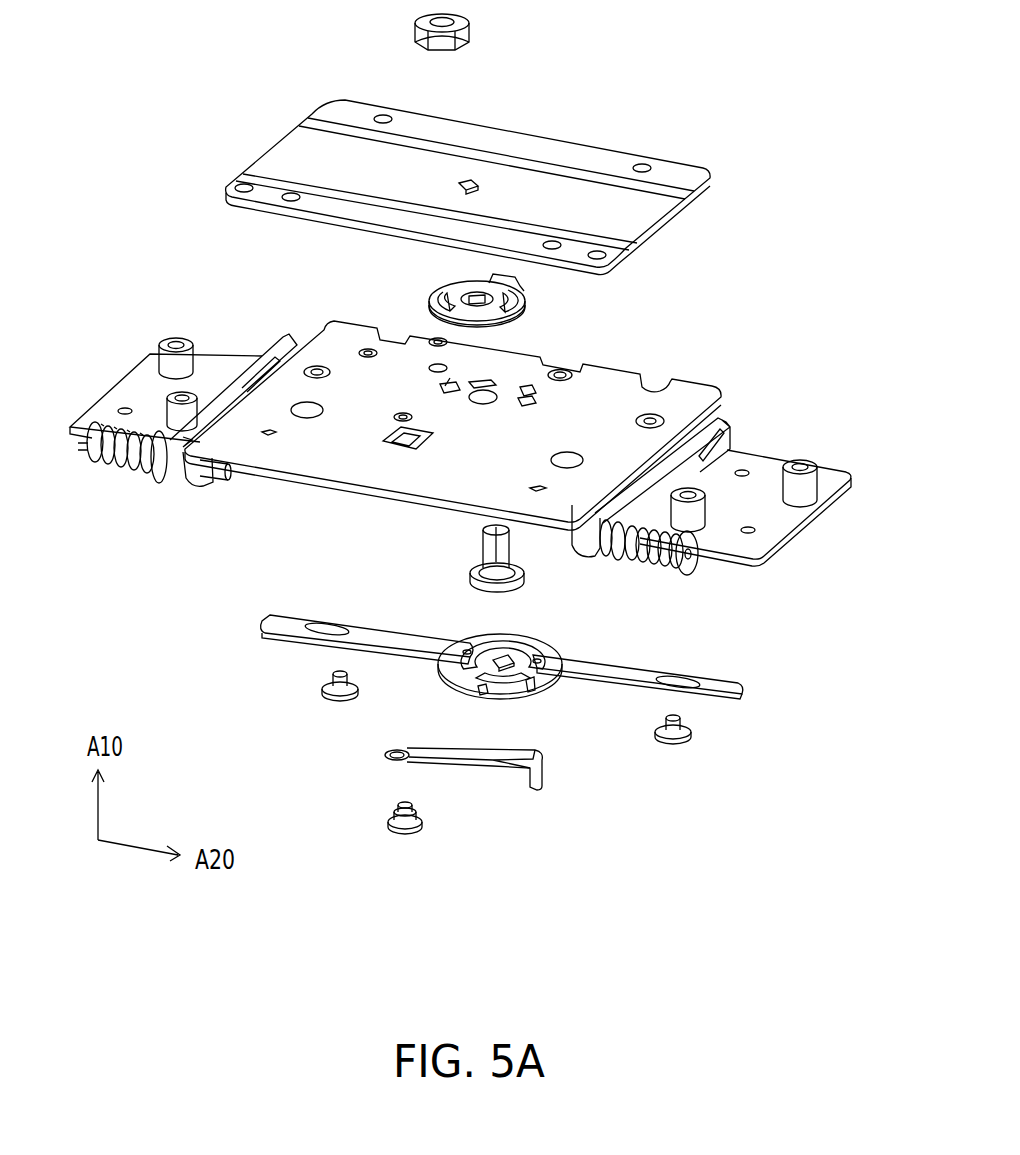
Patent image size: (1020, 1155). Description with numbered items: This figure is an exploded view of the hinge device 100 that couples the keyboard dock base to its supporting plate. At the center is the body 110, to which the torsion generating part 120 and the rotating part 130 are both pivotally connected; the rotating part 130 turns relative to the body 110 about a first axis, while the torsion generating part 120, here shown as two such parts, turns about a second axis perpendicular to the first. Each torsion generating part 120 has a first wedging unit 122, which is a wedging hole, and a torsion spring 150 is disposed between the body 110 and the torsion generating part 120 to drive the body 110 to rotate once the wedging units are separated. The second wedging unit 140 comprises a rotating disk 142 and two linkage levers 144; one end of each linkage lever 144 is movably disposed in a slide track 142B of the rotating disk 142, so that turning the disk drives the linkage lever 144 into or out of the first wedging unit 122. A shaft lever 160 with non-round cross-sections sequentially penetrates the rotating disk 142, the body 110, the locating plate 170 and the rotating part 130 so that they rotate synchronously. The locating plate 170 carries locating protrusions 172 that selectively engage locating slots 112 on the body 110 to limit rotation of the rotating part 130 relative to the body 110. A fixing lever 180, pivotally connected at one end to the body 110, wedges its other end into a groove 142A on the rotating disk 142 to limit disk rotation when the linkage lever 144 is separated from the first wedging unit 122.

The hinge device 100 is at (818, 877).
The body 110 is at (307, 453).
The locating slot 112 is at (447, 388).
The torsion generating part 120 is at (145, 383).
The first wedging unit 122 is at (726, 436).
The rotating part 130 is at (522, 145).
The second wedging unit 140 is at (502, 654).
The rotating disk 142 is at (507, 677).
The groove 142A is at (484, 696).
The slide track 142B is at (529, 682).
The linkage lever 144 is at (723, 690).
The torsion spring 150 is at (637, 560).
The shaft lever 160 is at (487, 553).
The locating plate 170 is at (520, 294).
The locating protrusion 172 is at (517, 313).
The fixing lever 180 is at (503, 760).